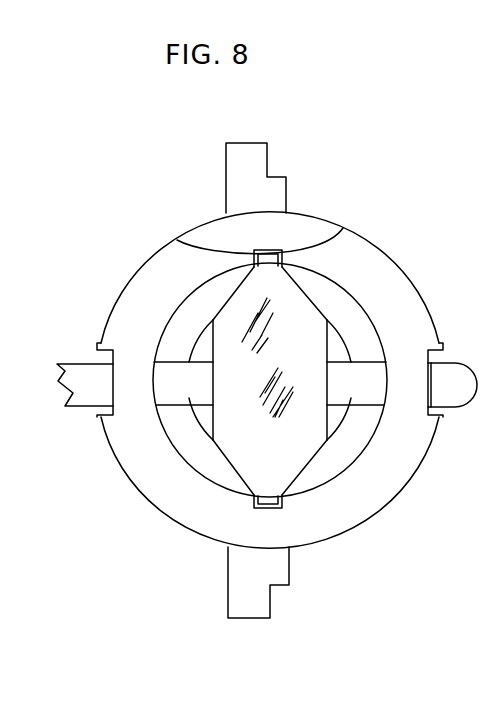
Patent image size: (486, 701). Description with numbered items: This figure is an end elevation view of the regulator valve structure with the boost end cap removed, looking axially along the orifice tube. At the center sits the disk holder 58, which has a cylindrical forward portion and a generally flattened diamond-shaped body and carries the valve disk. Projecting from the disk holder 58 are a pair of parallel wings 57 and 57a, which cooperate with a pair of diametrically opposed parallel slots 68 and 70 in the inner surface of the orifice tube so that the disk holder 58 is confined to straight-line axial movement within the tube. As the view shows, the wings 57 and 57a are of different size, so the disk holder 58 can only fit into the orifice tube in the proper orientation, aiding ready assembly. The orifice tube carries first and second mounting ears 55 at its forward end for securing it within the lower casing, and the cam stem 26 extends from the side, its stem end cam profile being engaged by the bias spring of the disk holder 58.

The cam stem 26 is at (77, 356).
The mounting ears 55 is at (278, 177).
The wing 57 is at (342, 229).
The wing 57a is at (288, 497).
The disk holder 58 is at (321, 302).
The slot 68 is at (252, 498).
The slot 70 is at (177, 239).